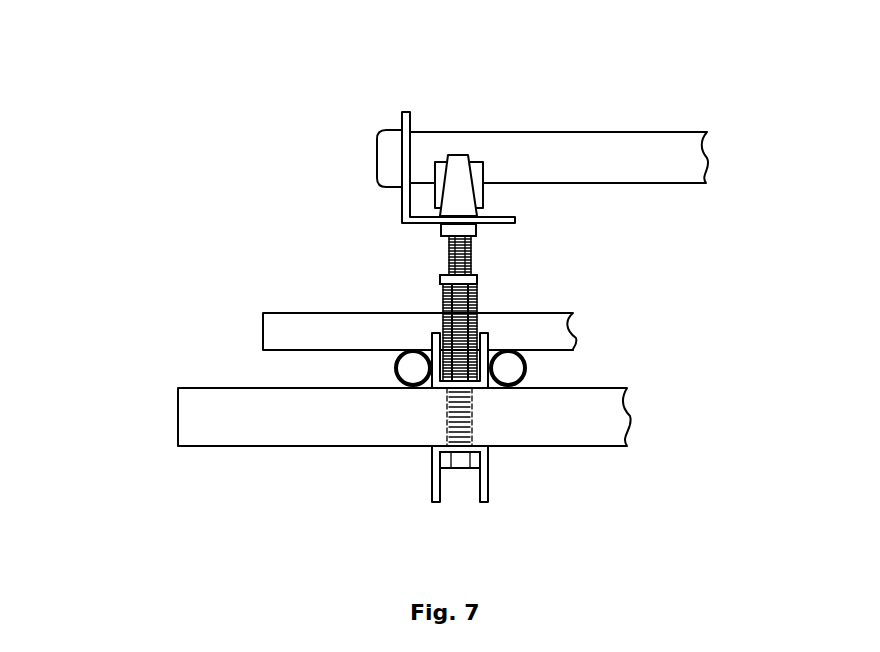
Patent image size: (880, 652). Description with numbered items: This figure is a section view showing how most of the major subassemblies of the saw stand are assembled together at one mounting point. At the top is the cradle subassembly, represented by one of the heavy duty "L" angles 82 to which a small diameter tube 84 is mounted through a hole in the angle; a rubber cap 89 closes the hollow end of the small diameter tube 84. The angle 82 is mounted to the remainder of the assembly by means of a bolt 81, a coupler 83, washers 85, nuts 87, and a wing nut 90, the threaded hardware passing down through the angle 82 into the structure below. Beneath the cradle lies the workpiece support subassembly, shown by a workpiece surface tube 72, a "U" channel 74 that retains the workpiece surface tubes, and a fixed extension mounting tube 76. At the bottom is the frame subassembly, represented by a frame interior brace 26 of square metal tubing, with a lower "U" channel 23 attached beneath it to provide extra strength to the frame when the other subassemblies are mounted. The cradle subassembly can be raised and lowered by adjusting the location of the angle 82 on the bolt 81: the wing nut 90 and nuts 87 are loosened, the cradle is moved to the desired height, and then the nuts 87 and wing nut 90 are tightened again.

The lower "U" channel 23 is at (490, 474).
The frame interior brace 26 is at (178, 401).
The workpiece surface tube 72 is at (272, 312).
The "U" channel 74 is at (488, 338).
The fixed extension mounting tube 76 is at (527, 367).
The bolt 81 is at (458, 470).
The angle 82 is at (402, 210).
The coupler 83 is at (443, 297).
The small diameter tube 84 is at (624, 132).
The washer 85 is at (478, 280).
The nut 87 is at (441, 230).
The rubber cap 89 is at (383, 130).
The wing nut 90 is at (460, 168).